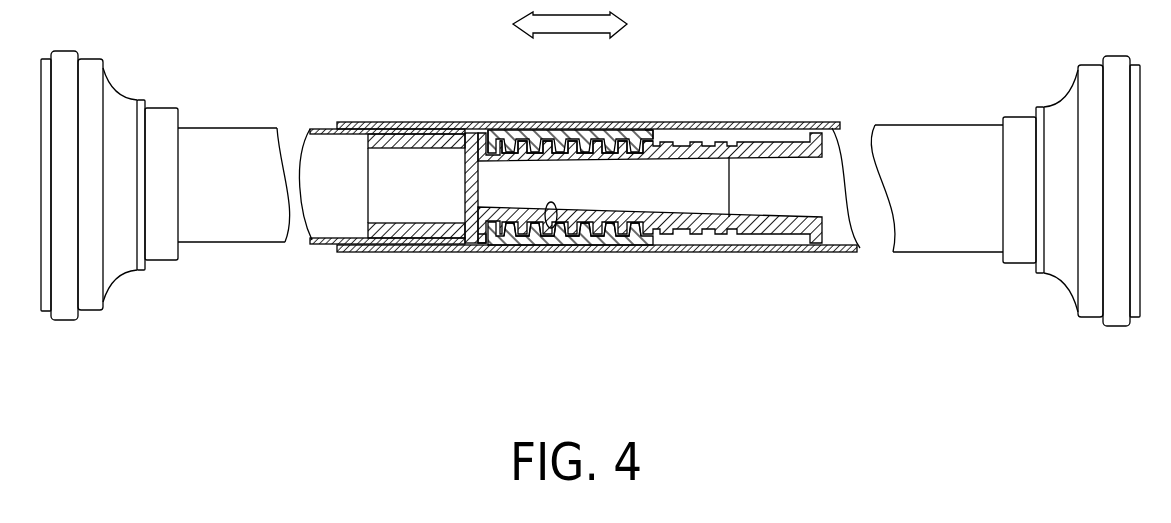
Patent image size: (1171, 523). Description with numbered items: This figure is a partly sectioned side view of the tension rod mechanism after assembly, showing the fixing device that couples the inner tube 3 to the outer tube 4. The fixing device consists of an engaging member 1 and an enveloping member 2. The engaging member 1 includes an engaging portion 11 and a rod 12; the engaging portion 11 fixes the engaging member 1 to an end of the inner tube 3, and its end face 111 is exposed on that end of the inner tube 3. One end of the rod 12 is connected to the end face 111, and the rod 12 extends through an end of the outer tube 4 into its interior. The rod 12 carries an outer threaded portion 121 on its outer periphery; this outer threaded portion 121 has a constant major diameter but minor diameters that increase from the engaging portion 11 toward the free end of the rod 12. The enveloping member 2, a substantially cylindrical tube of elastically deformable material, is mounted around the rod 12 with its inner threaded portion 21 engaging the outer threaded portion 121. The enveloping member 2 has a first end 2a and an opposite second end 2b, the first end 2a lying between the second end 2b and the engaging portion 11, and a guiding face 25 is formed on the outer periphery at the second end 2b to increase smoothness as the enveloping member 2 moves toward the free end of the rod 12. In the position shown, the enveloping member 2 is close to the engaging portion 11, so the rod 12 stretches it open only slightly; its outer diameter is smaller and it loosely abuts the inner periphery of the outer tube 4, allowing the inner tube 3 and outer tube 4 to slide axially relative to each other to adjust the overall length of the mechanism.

The engaging member 1 is at (410, 343).
The engaging portion 11 is at (415, 252).
The end face 111 is at (483, 250).
The rod 12 is at (783, 233).
The outer threaded portion 121 is at (500, 138).
The enveloping member 2 is at (664, 131).
The first end 2a is at (492, 135).
The second end 2b is at (642, 132).
The inner threaded portion 21 is at (548, 228).
The guiding face 25 is at (655, 128).
The inner tube 3 is at (317, 128).
The outer tube 4 is at (358, 122).